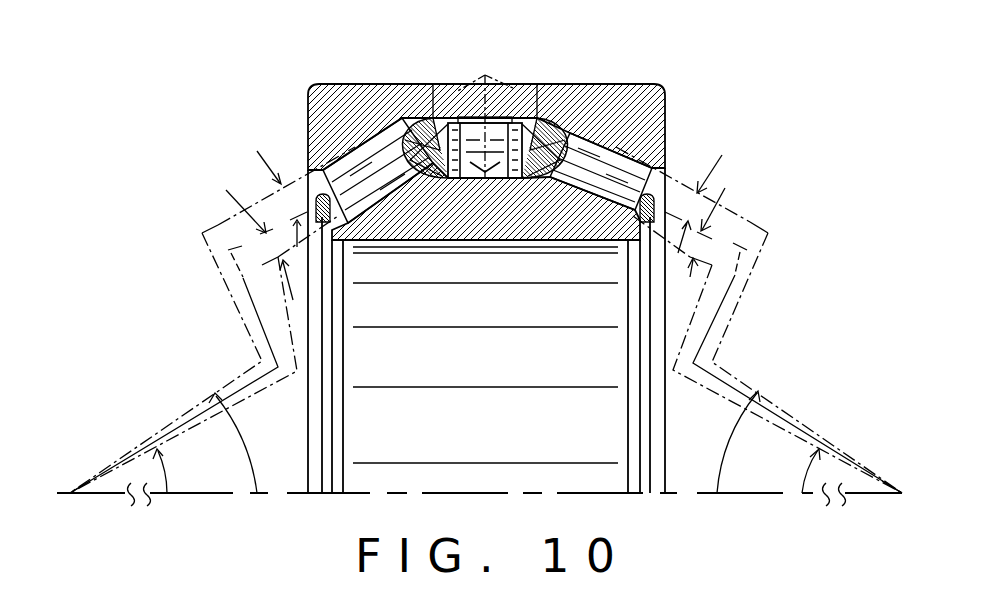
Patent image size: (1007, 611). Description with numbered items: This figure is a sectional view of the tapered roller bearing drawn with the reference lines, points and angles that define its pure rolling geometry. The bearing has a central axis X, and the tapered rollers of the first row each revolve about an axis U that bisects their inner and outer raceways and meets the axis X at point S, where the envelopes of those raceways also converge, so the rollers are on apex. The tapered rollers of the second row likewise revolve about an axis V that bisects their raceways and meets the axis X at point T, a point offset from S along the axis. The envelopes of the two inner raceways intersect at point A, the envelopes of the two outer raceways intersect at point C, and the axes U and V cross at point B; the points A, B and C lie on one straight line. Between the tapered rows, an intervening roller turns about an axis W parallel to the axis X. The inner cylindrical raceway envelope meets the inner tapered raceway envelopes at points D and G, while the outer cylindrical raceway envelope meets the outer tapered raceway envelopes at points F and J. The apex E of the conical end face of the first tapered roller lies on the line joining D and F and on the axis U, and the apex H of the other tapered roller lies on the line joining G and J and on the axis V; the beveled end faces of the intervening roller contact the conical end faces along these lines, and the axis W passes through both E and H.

The apex of conical end face E is at (360, 135).
The intersection point of cylindrical raceway and outer tapered raceway F is at (400, 122).
The axis of intervening roller W is at (480, 125).
The intersection point of outer raceway envelopes C is at (485, 75).
The intersection point of roller axes B is at (497, 153).
The intersection point of cylindrical raceway and second outer tapered raceway J is at (540, 137).
The apex of conical end face of second tapered roller H is at (595, 140).
The intersection point of cylindrical raceway and inner tapered raceway D is at (463, 180).
The intersection point of inner raceway envelopes A is at (490, 190).
The intersection point of cylindrical raceway and second inner tapered raceway G is at (512, 178).
The axis of first tapered roller U is at (230, 250).
The axis of second tapered roller V is at (740, 237).
The apex point S is at (76, 504).
The apex point T is at (896, 504).
The bearing axis X is at (212, 495).